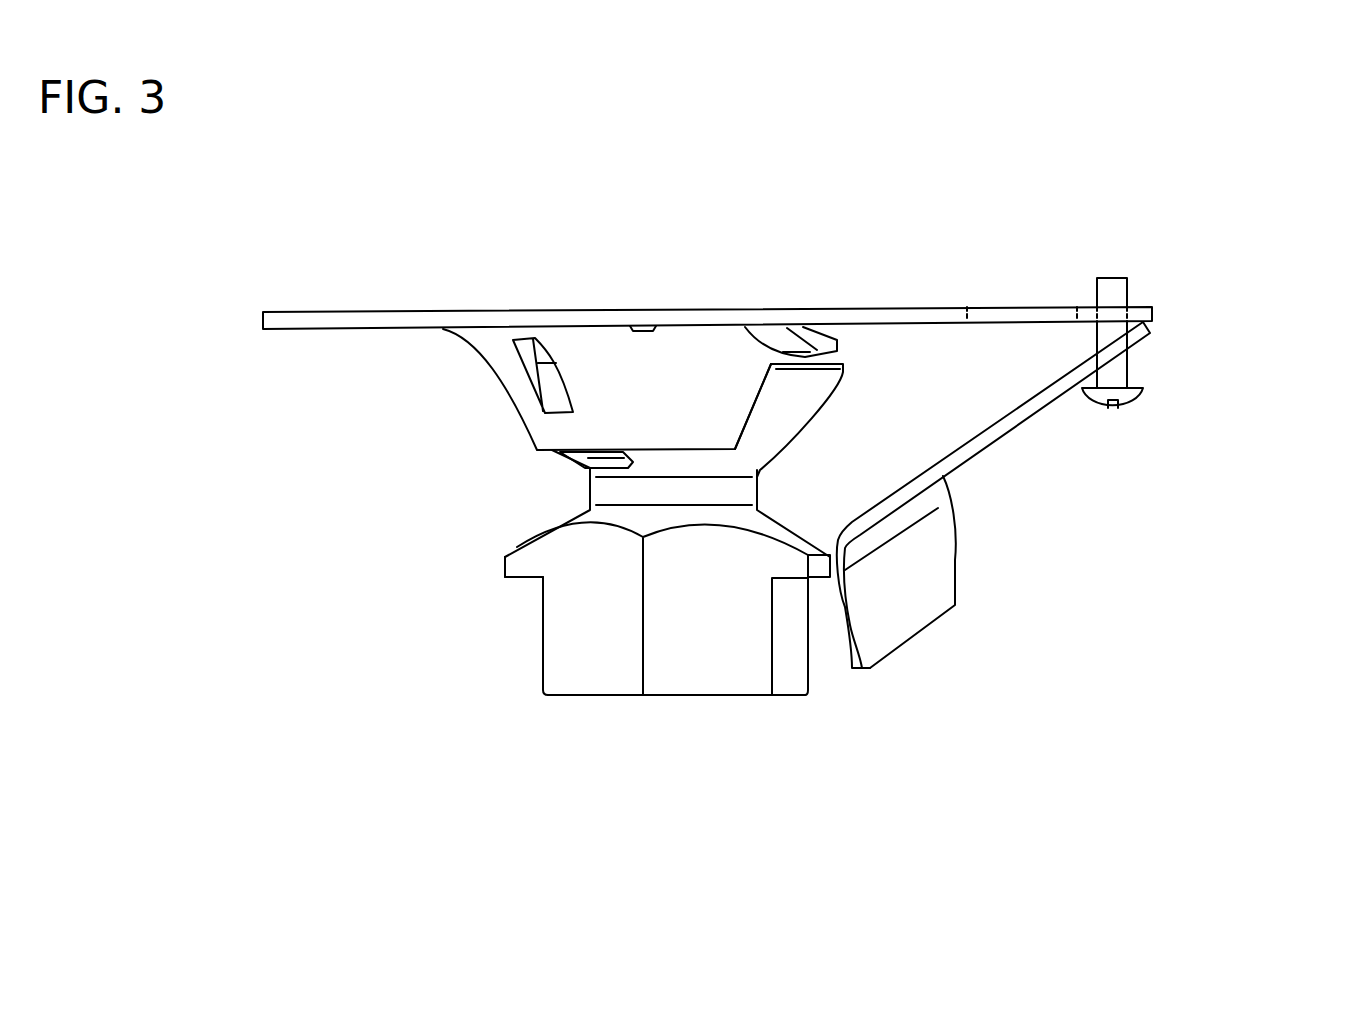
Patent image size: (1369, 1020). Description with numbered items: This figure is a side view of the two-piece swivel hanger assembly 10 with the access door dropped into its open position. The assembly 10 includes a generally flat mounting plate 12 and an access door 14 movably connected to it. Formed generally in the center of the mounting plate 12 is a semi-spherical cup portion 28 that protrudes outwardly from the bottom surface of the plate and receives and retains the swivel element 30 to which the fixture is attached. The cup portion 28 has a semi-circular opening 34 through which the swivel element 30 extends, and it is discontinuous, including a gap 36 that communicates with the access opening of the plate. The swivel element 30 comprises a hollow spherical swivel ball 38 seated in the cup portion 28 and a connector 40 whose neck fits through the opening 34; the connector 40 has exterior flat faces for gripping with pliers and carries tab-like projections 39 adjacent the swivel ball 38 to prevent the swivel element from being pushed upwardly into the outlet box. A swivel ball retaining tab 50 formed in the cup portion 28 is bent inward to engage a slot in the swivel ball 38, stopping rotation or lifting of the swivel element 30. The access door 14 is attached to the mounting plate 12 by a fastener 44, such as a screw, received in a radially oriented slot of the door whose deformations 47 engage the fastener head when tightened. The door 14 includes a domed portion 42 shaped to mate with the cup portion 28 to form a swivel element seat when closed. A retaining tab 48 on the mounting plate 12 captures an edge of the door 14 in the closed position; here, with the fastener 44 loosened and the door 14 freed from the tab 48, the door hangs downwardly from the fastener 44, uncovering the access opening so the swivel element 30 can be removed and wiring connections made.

The two-piece swivel hanger assembly 10 is at (1232, 133).
The mounting plate 12 is at (288, 330).
The access door 14 is at (979, 533).
The cup portion 28 is at (675, 367).
The swivel element 30 is at (579, 667).
The semi-circular opening 34 is at (548, 453).
The gap 36 is at (750, 410).
The swivel ball 38 is at (800, 398).
The projections 39 is at (522, 580).
The connector 40 is at (584, 697).
The domed portion 42 is at (915, 595).
The fastener 44 is at (1125, 400).
The deformations 47 is at (1105, 366).
The tab 48 is at (813, 340).
The swivel ball retaining tab 50 is at (550, 382).